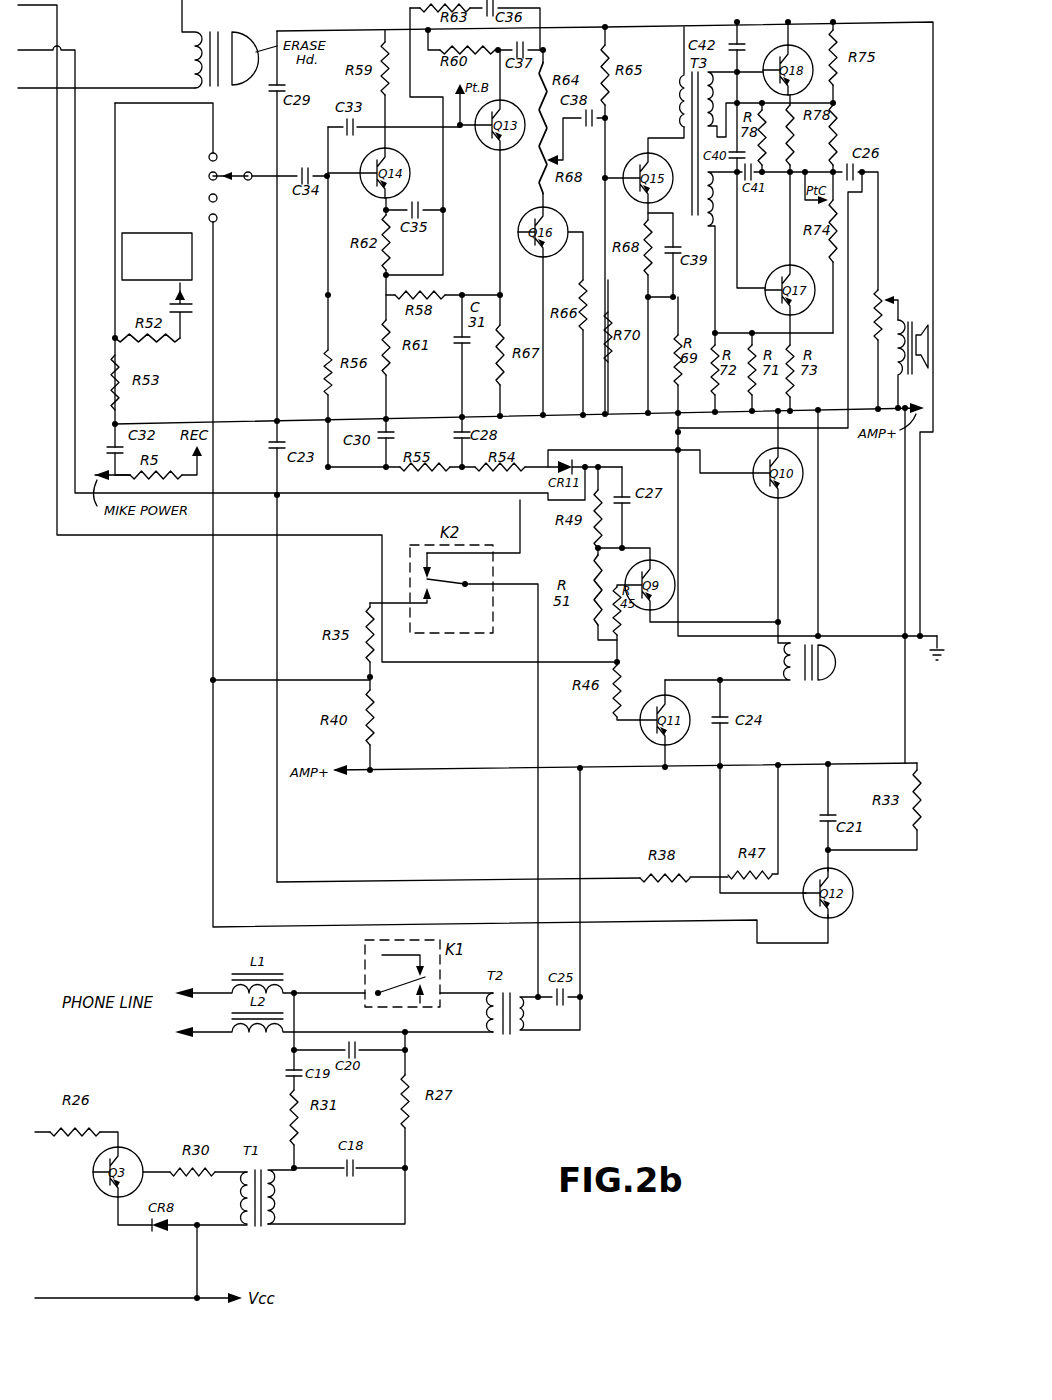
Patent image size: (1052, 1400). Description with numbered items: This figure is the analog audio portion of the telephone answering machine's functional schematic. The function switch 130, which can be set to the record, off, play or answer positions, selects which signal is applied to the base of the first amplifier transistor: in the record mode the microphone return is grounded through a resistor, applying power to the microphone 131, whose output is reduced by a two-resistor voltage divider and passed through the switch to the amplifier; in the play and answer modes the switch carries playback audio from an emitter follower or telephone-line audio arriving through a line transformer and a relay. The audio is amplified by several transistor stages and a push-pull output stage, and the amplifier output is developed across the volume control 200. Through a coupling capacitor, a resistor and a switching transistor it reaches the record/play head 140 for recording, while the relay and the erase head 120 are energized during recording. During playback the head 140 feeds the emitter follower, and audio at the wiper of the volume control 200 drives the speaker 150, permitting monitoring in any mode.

The erase head 120 is at (236, 34).
The function switch 130 is at (222, 172).
The microphone 131 is at (168, 233).
The record/play head 140 is at (832, 668).
The speaker 150 is at (920, 324).
The volume control 200 is at (797, 300).